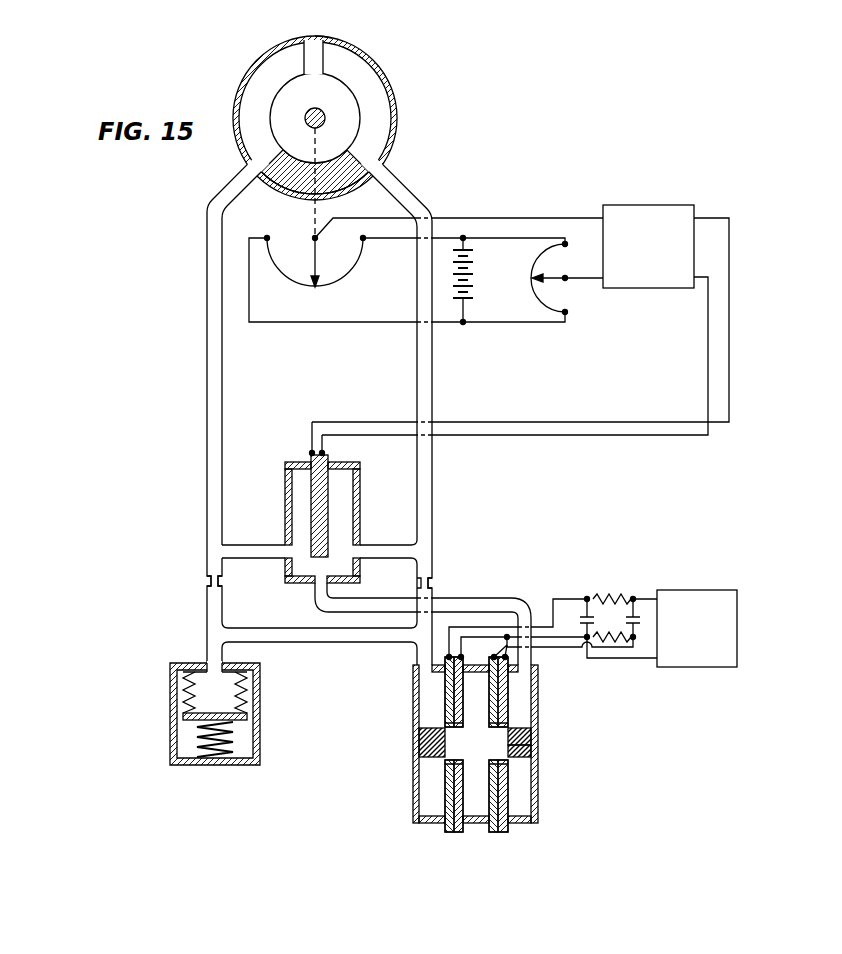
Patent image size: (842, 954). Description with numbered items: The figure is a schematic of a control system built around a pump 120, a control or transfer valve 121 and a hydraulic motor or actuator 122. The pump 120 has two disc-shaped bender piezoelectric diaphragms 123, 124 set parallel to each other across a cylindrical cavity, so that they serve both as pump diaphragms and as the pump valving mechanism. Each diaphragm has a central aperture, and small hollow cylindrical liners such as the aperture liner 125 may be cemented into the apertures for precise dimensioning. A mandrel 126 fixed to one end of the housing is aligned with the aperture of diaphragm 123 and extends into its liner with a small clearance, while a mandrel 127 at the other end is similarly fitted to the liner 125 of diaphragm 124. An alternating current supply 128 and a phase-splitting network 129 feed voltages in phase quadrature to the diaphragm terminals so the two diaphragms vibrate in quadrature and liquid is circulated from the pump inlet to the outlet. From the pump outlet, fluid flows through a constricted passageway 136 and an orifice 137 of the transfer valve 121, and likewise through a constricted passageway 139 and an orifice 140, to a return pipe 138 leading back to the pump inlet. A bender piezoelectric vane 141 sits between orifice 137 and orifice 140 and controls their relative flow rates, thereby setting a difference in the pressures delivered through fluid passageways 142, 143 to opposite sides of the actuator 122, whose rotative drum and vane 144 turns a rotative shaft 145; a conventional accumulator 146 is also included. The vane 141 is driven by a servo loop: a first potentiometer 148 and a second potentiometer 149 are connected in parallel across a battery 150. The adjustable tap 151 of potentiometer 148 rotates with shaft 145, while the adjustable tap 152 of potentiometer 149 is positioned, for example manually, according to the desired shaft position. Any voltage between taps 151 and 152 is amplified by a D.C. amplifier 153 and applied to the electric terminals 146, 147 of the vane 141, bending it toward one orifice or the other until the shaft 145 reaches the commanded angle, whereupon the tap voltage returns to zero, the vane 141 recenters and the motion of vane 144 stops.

The pump 120 is at (538, 803).
The transfer valve 121 is at (360, 502).
The hydraulic motor or actuator 122 is at (392, 133).
The bender piezoelectric diaphragm 123 is at (450, 800).
The bender piezoelectric diaphragm 124 is at (494, 800).
The aperture liner 125 is at (512, 754).
The mandrel 126 is at (430, 732).
The mandrel 127 is at (516, 735).
The alternating current supply 128 is at (705, 590).
The phase-splitting network 129 is at (626, 578).
The constricted passageway 136 is at (436, 582).
The orifice 137 is at (345, 544).
The return pipe 138 is at (478, 595).
The constricted passageway 139 is at (206, 582).
The orifice 140 is at (298, 544).
The bender piezoelectric vane 141 is at (306, 500).
The fluid passageway 142 is at (432, 392).
The fluid passageway 143 is at (200, 418).
The rotative drum and vane 144 is at (324, 58).
The rotative shaft 145 is at (325, 114).
The accumulator 146 is at (310, 452).
The electric terminal 147 is at (325, 450).
The first potentiometer 148 is at (340, 268).
The second potentiometer 149 is at (531, 291).
The battery 150 is at (476, 278).
The adjustable tap 151 is at (310, 268).
The adjustable tap 152 is at (563, 285).
The D.C. amplifier 153 is at (632, 208).